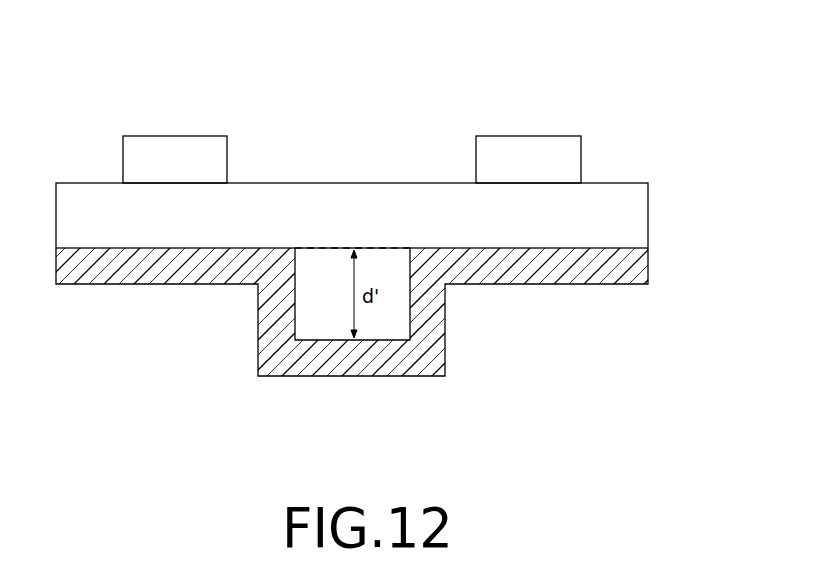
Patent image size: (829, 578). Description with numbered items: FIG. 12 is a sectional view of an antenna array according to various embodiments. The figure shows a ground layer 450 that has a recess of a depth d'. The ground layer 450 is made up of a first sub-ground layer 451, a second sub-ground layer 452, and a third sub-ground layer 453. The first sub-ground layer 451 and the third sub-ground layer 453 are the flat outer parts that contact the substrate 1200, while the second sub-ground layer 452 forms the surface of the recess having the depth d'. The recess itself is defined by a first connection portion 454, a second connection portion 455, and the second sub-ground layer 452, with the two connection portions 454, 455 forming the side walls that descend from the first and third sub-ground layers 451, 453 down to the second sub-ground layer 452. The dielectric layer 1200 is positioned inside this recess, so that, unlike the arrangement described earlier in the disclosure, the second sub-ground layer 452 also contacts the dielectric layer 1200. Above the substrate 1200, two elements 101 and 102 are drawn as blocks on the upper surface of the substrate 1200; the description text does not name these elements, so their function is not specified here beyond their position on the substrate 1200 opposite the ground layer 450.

The substrate 1200 is at (640, 217).
The first electrode pad 101 is at (173, 135).
The second electrode pad 102 is at (526, 135).
The ground layer 450 is at (387, 344).
The first sub-ground layer 451 is at (118, 272).
The second sub-ground layer 452 is at (345, 362).
The third sub-ground layer 453 is at (612, 270).
The first connection portion 454 is at (275, 343).
The second connection portion 455 is at (433, 328).